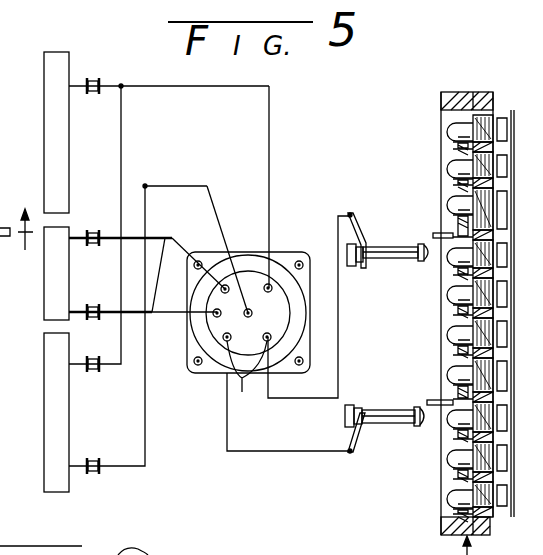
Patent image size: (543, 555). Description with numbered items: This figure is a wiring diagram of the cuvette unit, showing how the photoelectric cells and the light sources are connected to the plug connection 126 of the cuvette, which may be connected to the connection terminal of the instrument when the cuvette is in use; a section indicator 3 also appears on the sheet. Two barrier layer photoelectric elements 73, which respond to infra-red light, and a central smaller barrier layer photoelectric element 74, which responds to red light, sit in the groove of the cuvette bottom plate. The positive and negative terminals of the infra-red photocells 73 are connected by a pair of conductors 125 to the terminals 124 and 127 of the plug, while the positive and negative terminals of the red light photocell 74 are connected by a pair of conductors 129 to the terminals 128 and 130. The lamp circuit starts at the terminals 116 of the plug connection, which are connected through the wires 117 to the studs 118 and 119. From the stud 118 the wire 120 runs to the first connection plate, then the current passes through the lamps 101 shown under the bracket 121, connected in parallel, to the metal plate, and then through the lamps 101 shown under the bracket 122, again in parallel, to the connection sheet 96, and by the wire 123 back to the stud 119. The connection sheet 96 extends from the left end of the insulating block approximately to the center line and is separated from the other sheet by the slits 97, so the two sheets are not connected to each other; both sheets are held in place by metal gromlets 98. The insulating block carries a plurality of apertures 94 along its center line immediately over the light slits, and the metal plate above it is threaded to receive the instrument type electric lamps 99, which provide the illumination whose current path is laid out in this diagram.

The section line 3 is at (16, 240).
The barrier layer photoelectric element 73 is at (69, 57).
The barrier layer photoelectric element 74 is at (69, 272).
The conductors 125 is at (158, 186).
The conductors 129 is at (156, 238).
The terminal 130 is at (225, 289).
The terminal 127 is at (272, 286).
The terminal 128 is at (213, 315).
The terminal 124 is at (252, 313).
The plug connection 126 is at (195, 373).
The terminals 116 is at (247, 370).
The wires 117 is at (277, 451).
The stud 119 is at (378, 262).
The stud 118 is at (370, 420).
The wire 123 is at (433, 235).
The wire 120 is at (429, 400).
The connection sheet 96 is at (465, 92).
The lamps 101 is at (497, 373).
The bracket 122 is at (512, 124).
The bracket 121 is at (510, 517).
The metal gromlets 98 is at (458, 203).
The instrument type electric lamps 99 is at (458, 288).
The slits 97 is at (463, 315).
The apertures 94 is at (457, 487).